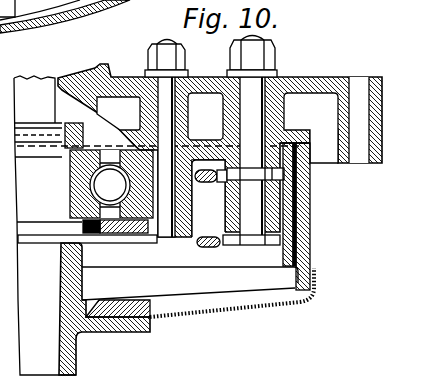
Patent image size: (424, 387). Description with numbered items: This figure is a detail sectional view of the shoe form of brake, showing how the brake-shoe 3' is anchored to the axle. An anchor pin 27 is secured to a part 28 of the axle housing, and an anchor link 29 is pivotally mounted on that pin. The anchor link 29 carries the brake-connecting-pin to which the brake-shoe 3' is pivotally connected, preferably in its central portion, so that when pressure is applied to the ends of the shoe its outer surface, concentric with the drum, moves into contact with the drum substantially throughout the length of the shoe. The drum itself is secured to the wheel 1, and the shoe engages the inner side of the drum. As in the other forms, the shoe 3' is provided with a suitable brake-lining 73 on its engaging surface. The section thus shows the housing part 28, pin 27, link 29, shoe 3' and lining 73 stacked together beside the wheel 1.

The wheel 1 is at (95, 324).
The brake-shoe 3' is at (319, 216).
The anchor pin 27 is at (252, 125).
The part of the axle housing 28 is at (275, 88).
The anchor link 29 is at (300, 196).
The brake-lining 73 is at (300, 240).